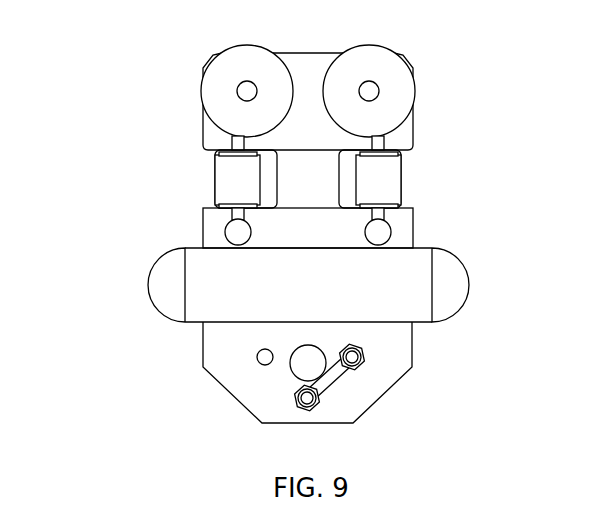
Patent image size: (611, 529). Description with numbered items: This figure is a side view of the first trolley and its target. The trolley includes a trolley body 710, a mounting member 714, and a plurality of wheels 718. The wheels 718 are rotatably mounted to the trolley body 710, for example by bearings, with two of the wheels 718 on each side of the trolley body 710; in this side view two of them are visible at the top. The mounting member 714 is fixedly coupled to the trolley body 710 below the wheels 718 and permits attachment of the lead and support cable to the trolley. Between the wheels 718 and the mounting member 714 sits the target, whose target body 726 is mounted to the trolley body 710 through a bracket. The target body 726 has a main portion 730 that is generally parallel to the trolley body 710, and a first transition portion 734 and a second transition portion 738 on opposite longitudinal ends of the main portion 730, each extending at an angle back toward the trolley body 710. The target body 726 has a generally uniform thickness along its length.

The trolley body 710 is at (223, 368).
The mounting member 714 is at (332, 377).
The wheels 718 is at (213, 88).
The target body 726 is at (312, 297).
The main portion 730 is at (350, 282).
The first transition portion 734 is at (117, 287).
The second transition portion 738 is at (500, 287).